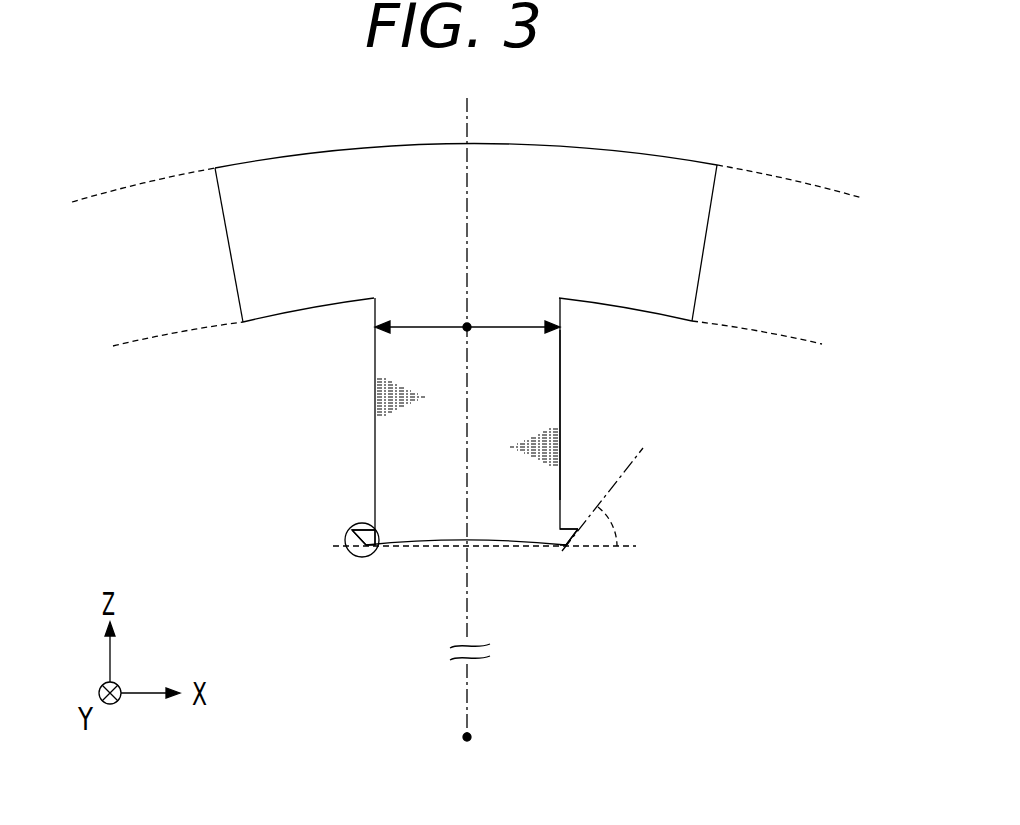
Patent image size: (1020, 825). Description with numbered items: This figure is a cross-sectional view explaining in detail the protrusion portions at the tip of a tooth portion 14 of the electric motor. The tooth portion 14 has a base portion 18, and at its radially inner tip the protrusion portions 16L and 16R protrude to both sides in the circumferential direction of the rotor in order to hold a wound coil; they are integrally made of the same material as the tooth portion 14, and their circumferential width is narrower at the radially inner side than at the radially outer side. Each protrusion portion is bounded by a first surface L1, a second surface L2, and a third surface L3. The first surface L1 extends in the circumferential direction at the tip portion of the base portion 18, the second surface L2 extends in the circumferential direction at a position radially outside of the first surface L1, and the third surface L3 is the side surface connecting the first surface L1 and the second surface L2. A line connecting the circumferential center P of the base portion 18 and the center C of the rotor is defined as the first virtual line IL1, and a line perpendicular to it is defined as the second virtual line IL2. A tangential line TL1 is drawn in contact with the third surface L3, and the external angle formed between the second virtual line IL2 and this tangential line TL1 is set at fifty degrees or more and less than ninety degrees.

The tooth portion 14 is at (575, 402).
The base portion 18 is at (373, 355).
The protrusion portion 16L is at (346, 526).
The protrusion portion 16R is at (584, 576).
The center in the circumferential direction of the base portion P is at (469, 325).
The first virtual line IL1 is at (470, 389).
The second virtual line IL2 is at (425, 547).
The first surface L1 is at (562, 543).
The second surface L2 is at (570, 527).
The third surface L3 is at (575, 531).
The tangential line TL1 is at (637, 468).
The center of the rotor C is at (462, 736).